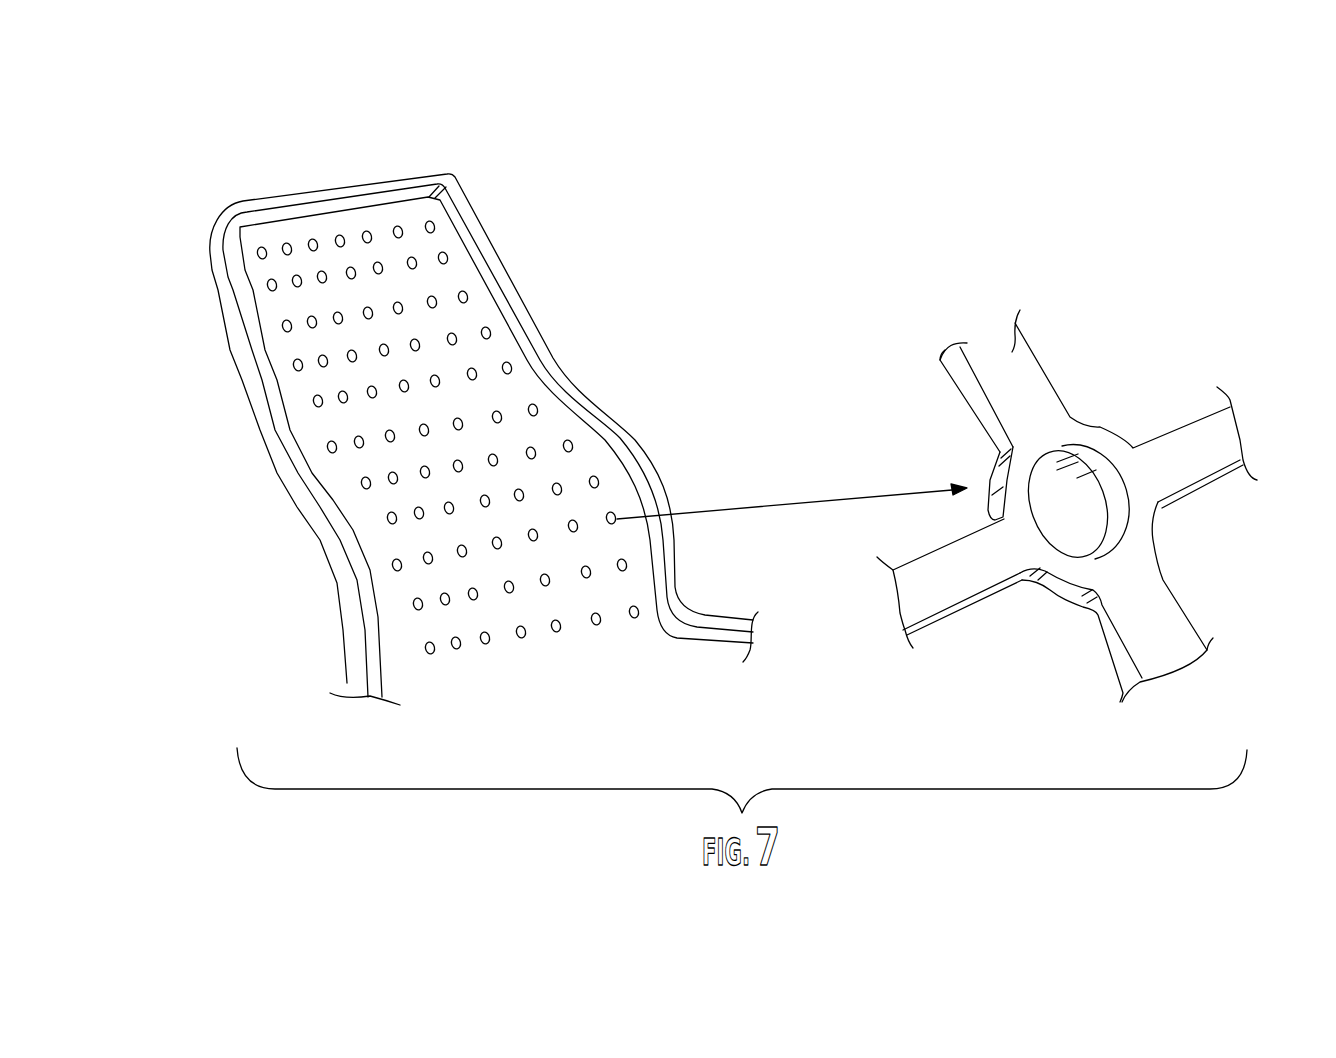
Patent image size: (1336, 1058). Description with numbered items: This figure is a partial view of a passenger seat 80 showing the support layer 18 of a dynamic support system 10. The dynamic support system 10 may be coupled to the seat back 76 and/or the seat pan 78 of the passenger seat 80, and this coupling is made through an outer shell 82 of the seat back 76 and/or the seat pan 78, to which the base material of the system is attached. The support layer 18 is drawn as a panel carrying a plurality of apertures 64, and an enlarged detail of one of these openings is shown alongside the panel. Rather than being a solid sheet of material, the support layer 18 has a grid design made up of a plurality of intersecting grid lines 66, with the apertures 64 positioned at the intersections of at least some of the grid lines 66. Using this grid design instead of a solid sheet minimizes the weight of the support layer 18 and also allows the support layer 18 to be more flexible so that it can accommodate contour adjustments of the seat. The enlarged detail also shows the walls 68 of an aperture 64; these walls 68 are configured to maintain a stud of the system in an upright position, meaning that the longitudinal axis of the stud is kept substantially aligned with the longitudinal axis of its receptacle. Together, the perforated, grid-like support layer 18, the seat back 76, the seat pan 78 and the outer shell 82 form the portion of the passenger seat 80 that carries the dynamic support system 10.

The dynamic support system 10 is at (498, 340).
The support layer 18 is at (365, 231).
The apertures 64 is at (414, 512).
The grid lines 66 is at (1188, 452).
The walls 68 is at (1047, 457).
The seat back 76 is at (450, 176).
The seat pan 78 is at (687, 657).
The passenger seat 80 is at (170, 220).
The outer shell 82 is at (300, 508).